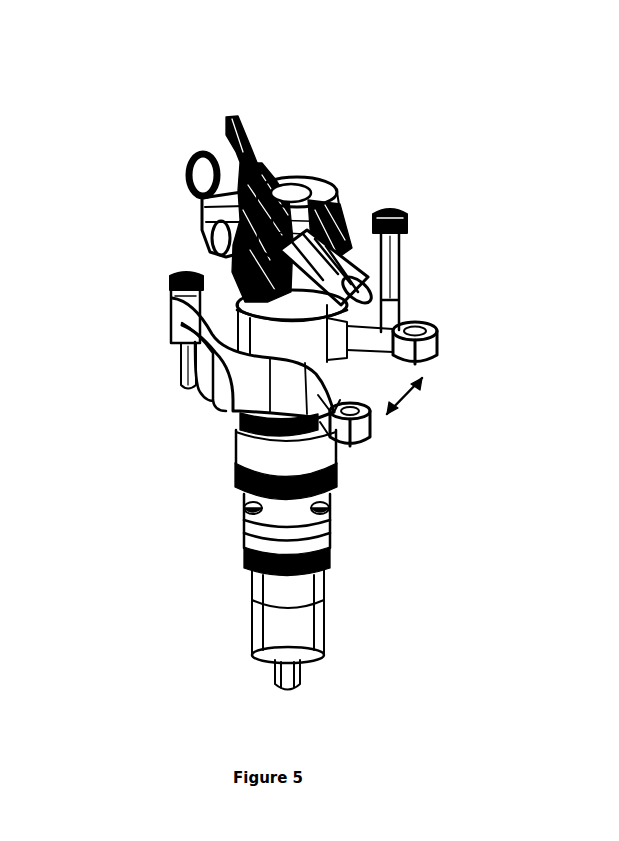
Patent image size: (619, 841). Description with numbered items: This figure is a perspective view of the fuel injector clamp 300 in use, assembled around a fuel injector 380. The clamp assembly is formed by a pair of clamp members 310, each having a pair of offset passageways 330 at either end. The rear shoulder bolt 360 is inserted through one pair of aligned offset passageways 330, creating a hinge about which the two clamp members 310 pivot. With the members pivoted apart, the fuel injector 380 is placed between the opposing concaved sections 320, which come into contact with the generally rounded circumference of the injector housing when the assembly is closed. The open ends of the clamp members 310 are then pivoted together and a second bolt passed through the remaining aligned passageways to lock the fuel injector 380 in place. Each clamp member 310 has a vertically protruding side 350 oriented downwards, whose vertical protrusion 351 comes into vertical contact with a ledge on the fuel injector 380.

The fuel injector clamp 300 is at (504, 358).
The clamp member 310 is at (362, 348).
The concaved section 320 is at (216, 388).
The offset passageway 330 is at (170, 300).
The vertically protruding side 350 is at (214, 398).
The vertical protrusion 351 is at (212, 404).
The rear shoulder bolt 360 is at (172, 274).
The fuel injector 380 is at (218, 384).